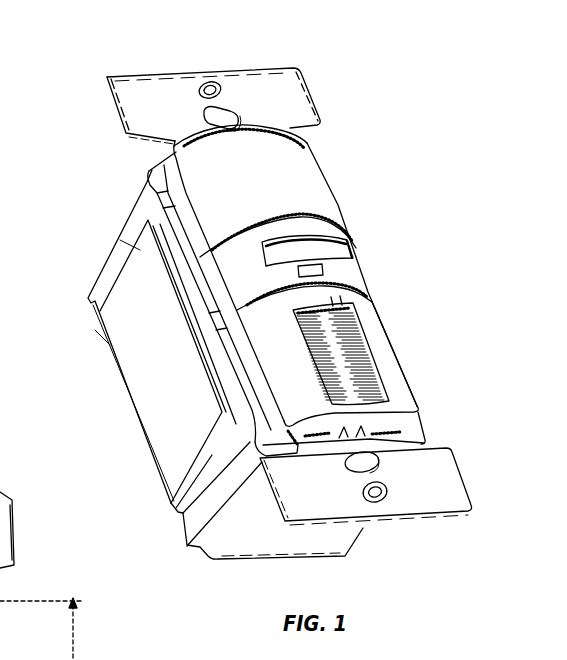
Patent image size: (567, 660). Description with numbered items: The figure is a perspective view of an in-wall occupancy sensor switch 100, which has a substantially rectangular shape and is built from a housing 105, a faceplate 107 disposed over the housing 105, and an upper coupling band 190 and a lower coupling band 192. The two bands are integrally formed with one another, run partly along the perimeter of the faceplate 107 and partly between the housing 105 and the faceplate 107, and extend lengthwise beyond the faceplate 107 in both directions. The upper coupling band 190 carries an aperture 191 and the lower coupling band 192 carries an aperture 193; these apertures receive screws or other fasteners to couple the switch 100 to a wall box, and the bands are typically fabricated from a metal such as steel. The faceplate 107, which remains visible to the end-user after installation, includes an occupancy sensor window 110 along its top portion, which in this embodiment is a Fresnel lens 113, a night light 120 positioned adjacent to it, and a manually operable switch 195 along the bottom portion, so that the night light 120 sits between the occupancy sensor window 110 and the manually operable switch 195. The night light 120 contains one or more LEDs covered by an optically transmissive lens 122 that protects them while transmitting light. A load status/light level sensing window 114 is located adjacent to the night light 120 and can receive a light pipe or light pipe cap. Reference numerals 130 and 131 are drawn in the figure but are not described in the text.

The in-wall occupancy sensor switch 100 is at (418, 79).
The housing 105 is at (160, 427).
The faceplate 107 is at (292, 328).
The occupancy sensor window 110 is at (332, 192).
The Fresnel lens 113 is at (305, 153).
The load status/light level sensing window 114 is at (297, 271).
The night light 120 is at (354, 255).
The lens 122 is at (278, 247).
The sensor window 130 is at (368, 311).
The lens 131 is at (388, 384).
The upper coupling band 190 is at (297, 73).
The aperture 191 is at (203, 78).
The lower coupling band 192 is at (447, 476).
The aperture 193 is at (380, 502).
The manually operable switch 195 is at (405, 341).